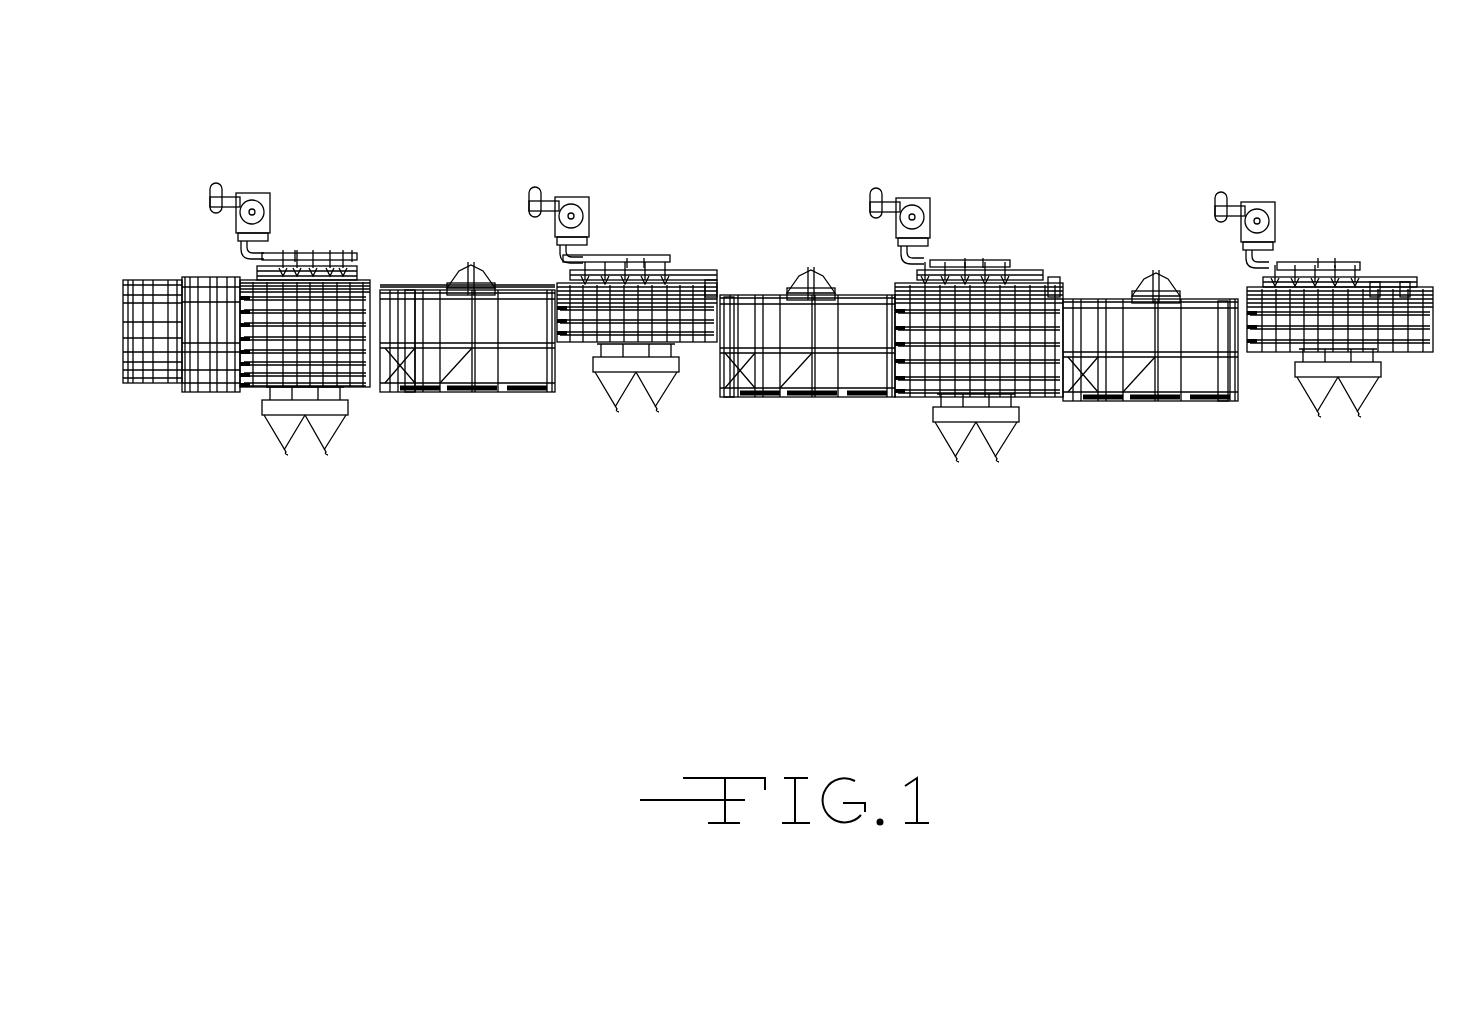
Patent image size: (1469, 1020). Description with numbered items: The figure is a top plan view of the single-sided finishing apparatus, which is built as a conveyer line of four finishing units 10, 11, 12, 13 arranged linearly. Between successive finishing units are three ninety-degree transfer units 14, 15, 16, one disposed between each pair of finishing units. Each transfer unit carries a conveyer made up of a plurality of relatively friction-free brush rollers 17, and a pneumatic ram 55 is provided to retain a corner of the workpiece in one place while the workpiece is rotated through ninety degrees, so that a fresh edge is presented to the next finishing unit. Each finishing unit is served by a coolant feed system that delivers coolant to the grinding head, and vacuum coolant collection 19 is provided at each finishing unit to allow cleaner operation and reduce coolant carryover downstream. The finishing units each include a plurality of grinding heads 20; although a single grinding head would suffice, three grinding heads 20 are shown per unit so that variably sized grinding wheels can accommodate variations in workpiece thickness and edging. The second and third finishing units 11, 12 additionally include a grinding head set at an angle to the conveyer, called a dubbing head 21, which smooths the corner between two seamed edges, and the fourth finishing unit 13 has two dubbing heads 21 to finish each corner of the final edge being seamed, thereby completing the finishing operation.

The finishing unit 10 is at (316, 238).
The finishing unit 11 is at (664, 226).
The finishing unit 12 is at (1004, 222).
The finishing unit 13 is at (1353, 230).
The 90° transfer unit 14 is at (500, 420).
The 90° transfer unit 15 is at (857, 430).
The 90° transfer unit 16 is at (1123, 420).
The brush rollers 17 is at (410, 300).
The vacuum coolant collection 19 is at (258, 197).
The grinding heads 20 is at (355, 255).
The dubbing head 21 is at (708, 282).
The pneumatic ram 55 is at (485, 270).